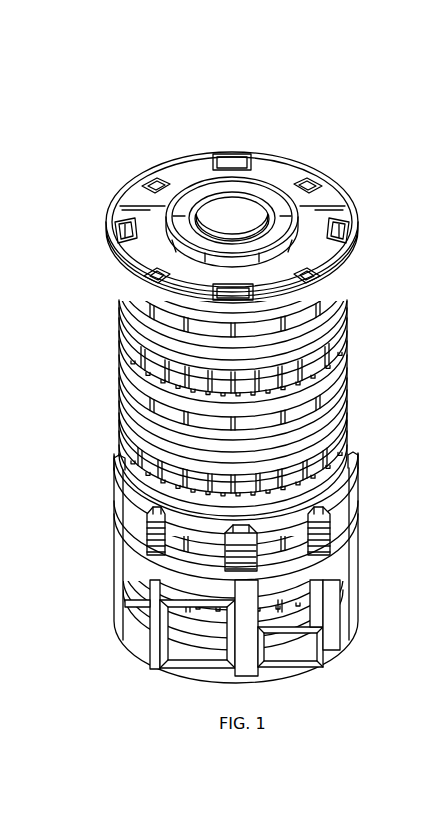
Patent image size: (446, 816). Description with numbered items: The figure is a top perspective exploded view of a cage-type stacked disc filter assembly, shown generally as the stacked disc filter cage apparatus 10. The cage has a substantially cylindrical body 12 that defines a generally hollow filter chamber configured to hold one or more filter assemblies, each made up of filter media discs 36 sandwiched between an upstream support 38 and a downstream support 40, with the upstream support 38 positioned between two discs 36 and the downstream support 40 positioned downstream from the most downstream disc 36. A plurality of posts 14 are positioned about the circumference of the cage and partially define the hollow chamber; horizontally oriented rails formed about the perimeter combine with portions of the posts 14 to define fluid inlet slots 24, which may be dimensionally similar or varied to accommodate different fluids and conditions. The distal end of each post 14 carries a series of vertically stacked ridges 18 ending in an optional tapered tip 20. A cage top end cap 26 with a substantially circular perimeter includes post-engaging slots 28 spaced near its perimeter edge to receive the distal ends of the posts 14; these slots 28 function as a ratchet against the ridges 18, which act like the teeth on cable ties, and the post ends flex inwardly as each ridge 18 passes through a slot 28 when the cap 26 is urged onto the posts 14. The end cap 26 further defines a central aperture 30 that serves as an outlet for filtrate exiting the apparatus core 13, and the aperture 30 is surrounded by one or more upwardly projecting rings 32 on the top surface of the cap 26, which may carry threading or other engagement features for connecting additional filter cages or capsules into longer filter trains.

The stacked disc filter cage apparatus 10 is at (318, 124).
The cylindrical body 12 is at (206, 581).
The apparatus core 13 is at (236, 226).
The posts 14 is at (328, 637).
The vertically stacked ridges 18 is at (352, 546).
The tapered tip 20 is at (238, 156).
The fluid inlet slots 24 is at (185, 620).
The cage top end cap 26 is at (175, 167).
The post-engaging slots 28 is at (354, 222).
The central aperture 30 is at (257, 211).
The upwardly projecting rings 32 is at (262, 204).
The filter media discs 36 is at (336, 354).
The upstream support 38 is at (332, 386).
The downstream support 40 is at (338, 312).